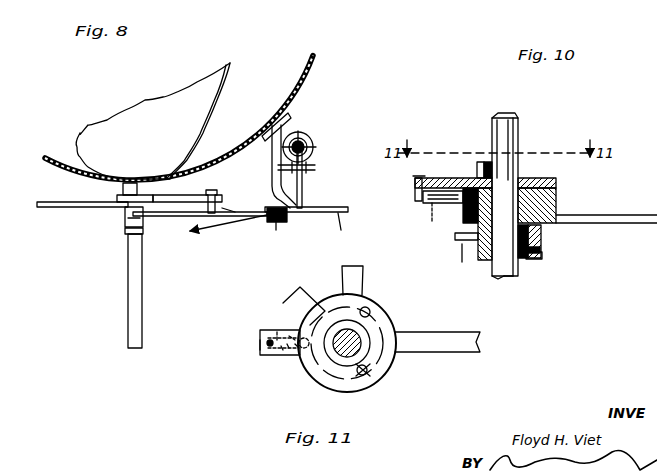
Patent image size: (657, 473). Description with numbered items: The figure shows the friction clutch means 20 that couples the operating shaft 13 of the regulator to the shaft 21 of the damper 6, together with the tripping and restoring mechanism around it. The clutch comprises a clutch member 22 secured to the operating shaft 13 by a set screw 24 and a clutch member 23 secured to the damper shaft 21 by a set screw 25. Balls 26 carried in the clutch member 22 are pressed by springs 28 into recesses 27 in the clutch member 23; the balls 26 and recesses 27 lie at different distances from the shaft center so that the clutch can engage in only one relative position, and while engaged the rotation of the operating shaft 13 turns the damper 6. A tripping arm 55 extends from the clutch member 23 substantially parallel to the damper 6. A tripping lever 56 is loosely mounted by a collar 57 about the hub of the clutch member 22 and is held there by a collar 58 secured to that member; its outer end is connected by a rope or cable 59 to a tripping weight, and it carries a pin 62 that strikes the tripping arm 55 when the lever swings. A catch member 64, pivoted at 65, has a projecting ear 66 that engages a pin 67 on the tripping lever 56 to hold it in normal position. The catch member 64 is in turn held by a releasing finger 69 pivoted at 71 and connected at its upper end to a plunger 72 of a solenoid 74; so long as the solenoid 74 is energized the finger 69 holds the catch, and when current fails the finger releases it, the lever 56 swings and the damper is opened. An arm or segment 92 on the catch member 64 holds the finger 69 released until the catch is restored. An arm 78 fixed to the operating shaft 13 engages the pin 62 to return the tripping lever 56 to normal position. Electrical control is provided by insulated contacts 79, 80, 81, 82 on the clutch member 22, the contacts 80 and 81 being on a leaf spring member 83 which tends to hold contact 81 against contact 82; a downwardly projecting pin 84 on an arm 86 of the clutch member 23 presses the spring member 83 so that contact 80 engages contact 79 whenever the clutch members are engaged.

In FIG. 8, the damper 6 is at (203, 113).
In FIG. 8, the operating shaft 13 is at (129, 258).
In FIG. 10, the operating shaft 13 is at (513, 276).
In FIG. 8, the friction clutch means 20 is at (118, 198).
In FIG. 10, the friction clutch means 20 is at (557, 196).
In FIG. 11, the friction clutch means 20 is at (398, 354).
In FIG. 10, the damper shaft 21 is at (519, 120).
In FIG. 11, the damper shaft 21 is at (336, 353).
In FIG. 10, the clutch member 22 is at (543, 232).
In FIG. 10, the clutch member 23 is at (556, 178).
In FIG. 11, the clutch member 23 is at (384, 324).
In FIG. 10, the set screw 24 is at (495, 273).
In FIG. 10, the set screw 25 is at (480, 156).
In FIG. 10, the balls 26 is at (460, 222).
In FIG. 11, the balls 26 is at (368, 370).
In FIG. 10, the recesses 27 is at (476, 172).
In FIG. 11, the recesses 27 is at (366, 378).
In FIG. 10, the springs 28 is at (460, 240).
In FIG. 8, the tripping arm 55 is at (177, 217).
In FIG. 11, the tripping arm 55 is at (343, 272).
In FIG. 8, the tripping lever 56 is at (224, 212).
In FIG. 10, the tripping lever 56 is at (470, 250).
In FIG. 11, the tripping lever 56 is at (290, 296).
In FIG. 8, the collar 57 is at (124, 216).
In FIG. 10, the collar 57 is at (543, 257).
In FIG. 8, the collar 58 is at (126, 232).
In FIG. 10, the collar 58 is at (538, 260).
In FIG. 8, the rope or cable 59 is at (228, 232).
In FIG. 8, the pin or lug 62 is at (200, 192).
In FIG. 8, the catch member 64 is at (310, 209).
In FIG. 8, the pivot 65 is at (288, 216).
In FIG. 8, the projecting ear 66 is at (268, 180).
In FIG. 8, the pin or lug 67 is at (278, 230).
In FIG. 8, the releasing finger 69 is at (303, 186).
In FIG. 8, the pivot 71 is at (307, 166).
In FIG. 8, the plunger 72 is at (306, 140).
In FIG. 8, the solenoid 74 is at (300, 136).
In FIG. 8, the arm 78 is at (70, 209).
In FIG. 10, the arm 78 is at (633, 224).
In FIG. 10, the insulated contact 79 is at (460, 205).
In FIG. 11, the insulated contact 79 is at (285, 348).
In FIG. 11, the insulated contact 80 is at (279, 346).
In FIG. 11, the insulated contact 81 is at (292, 334).
In FIG. 11, the insulated contact 82 is at (276, 334).
In FIG. 10, the leaf spring member 83 is at (425, 203).
In FIG. 11, the leaf spring member 83 is at (297, 350).
In FIG. 10, the pin 84 is at (415, 198).
In FIG. 11, the pin 84 is at (268, 344).
In FIG. 10, the arm 86 is at (414, 178).
In FIG. 11, the arm 86 is at (261, 332).
In FIG. 8, the arm or segment 92 is at (345, 229).